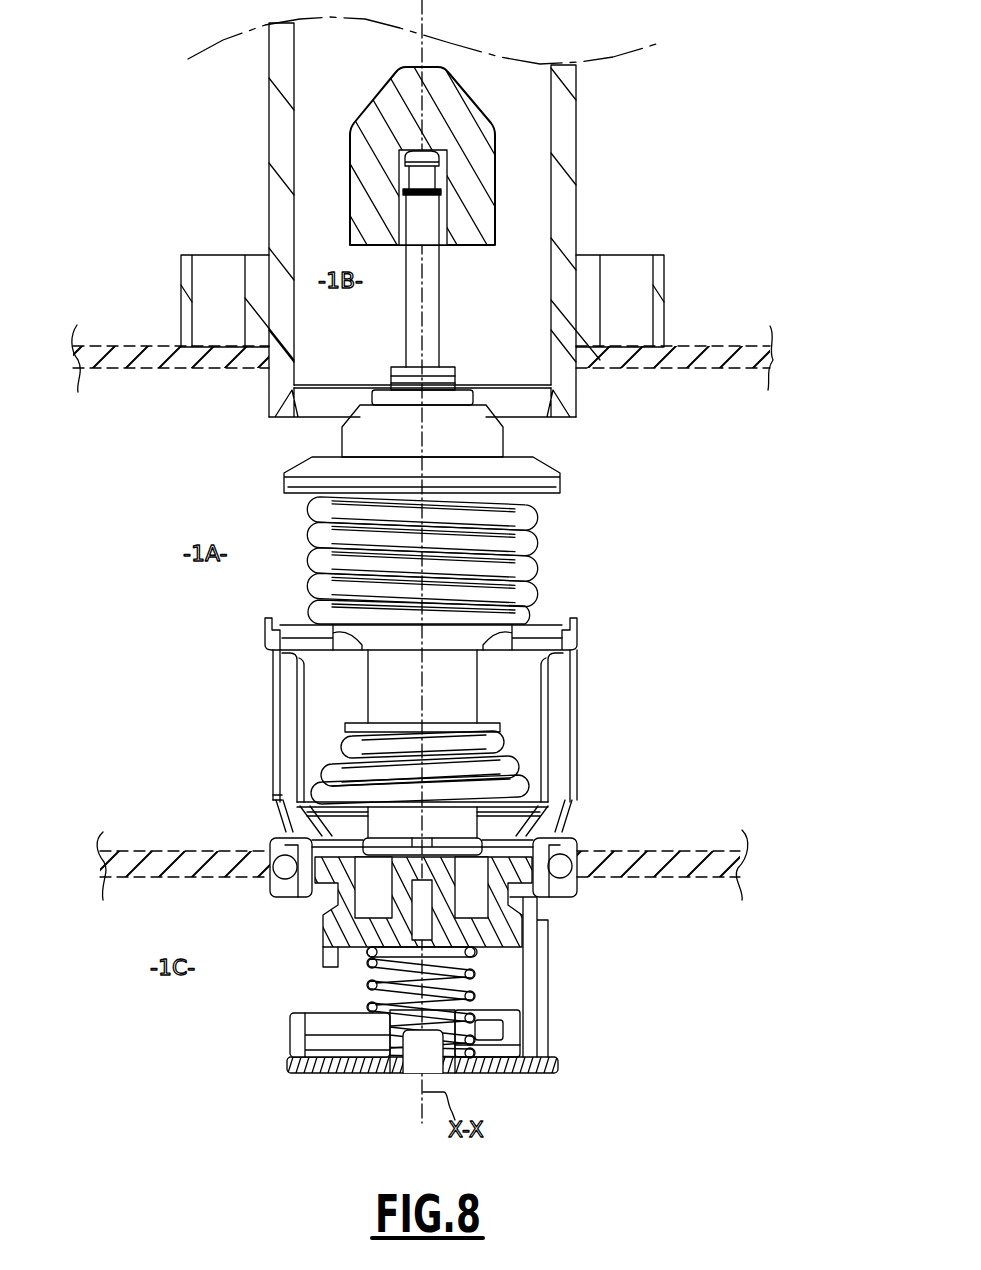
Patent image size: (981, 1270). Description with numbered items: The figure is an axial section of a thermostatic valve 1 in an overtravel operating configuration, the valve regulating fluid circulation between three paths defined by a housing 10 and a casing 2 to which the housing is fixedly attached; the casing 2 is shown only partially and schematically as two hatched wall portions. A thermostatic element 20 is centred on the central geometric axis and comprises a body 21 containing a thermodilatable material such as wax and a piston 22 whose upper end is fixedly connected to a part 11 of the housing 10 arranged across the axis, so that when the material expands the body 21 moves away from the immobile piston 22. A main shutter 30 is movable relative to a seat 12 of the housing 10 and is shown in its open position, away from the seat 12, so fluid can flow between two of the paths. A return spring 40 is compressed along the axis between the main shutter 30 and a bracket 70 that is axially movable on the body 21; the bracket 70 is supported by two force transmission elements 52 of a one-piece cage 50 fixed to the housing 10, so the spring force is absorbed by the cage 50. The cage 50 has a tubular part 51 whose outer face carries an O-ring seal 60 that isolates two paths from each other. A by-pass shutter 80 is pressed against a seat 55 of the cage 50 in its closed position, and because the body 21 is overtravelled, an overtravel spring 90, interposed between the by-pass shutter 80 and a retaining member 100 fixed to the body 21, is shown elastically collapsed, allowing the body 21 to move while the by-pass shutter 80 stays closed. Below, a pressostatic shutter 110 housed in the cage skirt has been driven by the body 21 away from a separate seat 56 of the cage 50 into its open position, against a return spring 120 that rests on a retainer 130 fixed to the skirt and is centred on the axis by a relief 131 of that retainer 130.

The thermostatic valve 1 is at (160, 106).
The casing 2 is at (119, 342).
The housing 10 is at (262, 192).
The part of the housing 11 is at (450, 126).
The seat 12 is at (296, 408).
The thermostatic element 20 is at (641, 148).
The body 21 is at (467, 430).
The piston 22 is at (448, 222).
The main shutter 30 is at (558, 466).
The return spring 40 is at (546, 521).
The cage 50 is at (427, 924).
The tubular part 51 is at (560, 838).
The force transmission elements 52 is at (549, 746).
The seat 55 is at (526, 794).
The seat 56 is at (545, 882).
The seal 60 is at (580, 866).
The bracket 70 is at (423, 684).
The by-pass shutter 80 is at (280, 803).
The overtravel spring 90 is at (333, 743).
The retaining member 100 is at (512, 719).
The pressostatic shutter 110 is at (320, 950).
The return spring 120 is at (358, 985).
The retainer 130 is at (368, 1076).
The relief 131 is at (414, 1022).